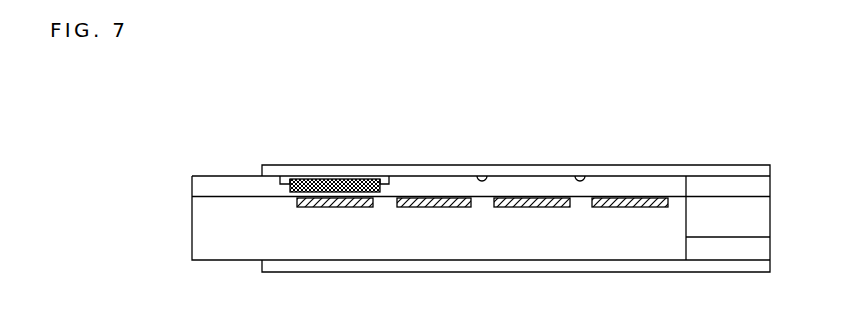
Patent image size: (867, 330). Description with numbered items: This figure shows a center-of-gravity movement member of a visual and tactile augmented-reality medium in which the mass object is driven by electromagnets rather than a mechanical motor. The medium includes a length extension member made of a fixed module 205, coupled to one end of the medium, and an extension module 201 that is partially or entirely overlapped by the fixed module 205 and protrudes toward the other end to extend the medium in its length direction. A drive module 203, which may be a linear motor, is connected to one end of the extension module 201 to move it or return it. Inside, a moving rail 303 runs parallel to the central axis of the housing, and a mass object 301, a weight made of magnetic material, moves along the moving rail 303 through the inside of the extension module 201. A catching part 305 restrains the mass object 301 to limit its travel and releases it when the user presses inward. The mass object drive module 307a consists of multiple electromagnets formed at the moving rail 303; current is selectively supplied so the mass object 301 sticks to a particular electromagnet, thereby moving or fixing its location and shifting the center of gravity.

The moving rail 303 is at (192, 185).
The fixed module 205 is at (528, 170).
The extension module 201 is at (640, 215).
The drive module 203 is at (745, 250).
The mass object 301 is at (348, 184).
The catching part 305 is at (283, 178).
The mass object drive module 307a is at (431, 197).